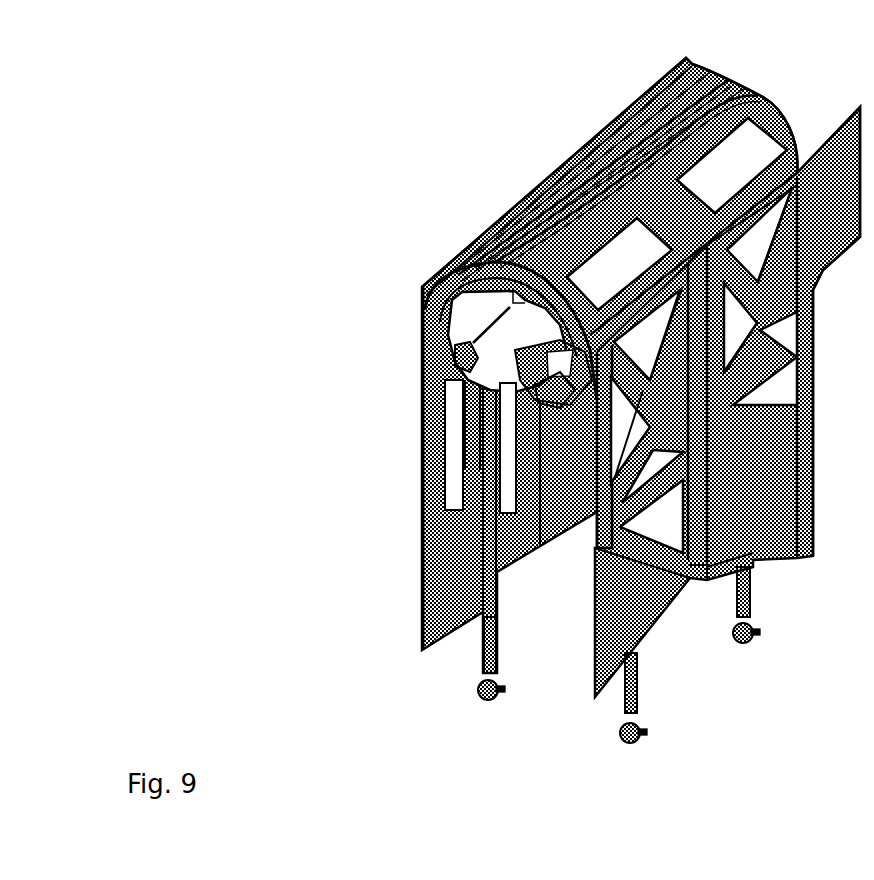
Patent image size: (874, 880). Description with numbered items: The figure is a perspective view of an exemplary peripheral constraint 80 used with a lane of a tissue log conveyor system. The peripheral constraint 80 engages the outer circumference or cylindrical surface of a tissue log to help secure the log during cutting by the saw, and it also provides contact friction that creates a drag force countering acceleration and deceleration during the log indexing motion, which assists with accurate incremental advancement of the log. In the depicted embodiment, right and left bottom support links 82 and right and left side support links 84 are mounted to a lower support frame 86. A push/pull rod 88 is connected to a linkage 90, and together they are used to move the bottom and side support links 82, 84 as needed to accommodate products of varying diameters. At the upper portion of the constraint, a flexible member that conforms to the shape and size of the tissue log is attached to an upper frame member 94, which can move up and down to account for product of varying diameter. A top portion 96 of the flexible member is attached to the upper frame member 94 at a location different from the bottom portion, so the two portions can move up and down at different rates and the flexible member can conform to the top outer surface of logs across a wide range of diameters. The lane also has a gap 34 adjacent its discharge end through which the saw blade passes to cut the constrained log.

The gap 34 is at (557, 168).
The peripheral constraint 80 is at (268, 194).
The bottom support links 82 is at (467, 368).
The side support links 84 is at (450, 330).
The lower support frame 86 is at (455, 474).
The push/pull rod 88 is at (491, 615).
The linkage 90 is at (445, 352).
The upper frame member 94 is at (743, 90).
The top portion of the flexible member 96 is at (482, 233).